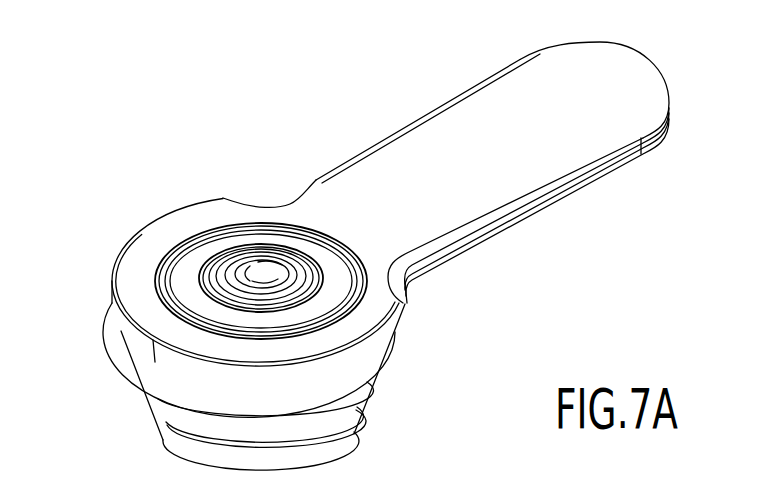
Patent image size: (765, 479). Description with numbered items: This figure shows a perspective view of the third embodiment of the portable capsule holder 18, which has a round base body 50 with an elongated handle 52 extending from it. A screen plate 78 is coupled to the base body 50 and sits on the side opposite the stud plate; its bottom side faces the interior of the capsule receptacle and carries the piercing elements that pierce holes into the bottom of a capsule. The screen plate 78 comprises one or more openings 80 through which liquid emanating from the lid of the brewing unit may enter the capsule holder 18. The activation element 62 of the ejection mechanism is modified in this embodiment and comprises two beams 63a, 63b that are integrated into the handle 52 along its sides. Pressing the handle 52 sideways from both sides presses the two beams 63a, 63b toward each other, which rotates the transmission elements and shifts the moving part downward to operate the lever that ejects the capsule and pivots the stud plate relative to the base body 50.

The portable capsule holder 18 is at (111, 118).
The activation element 62 is at (333, 148).
The handle 52 is at (485, 98).
The beam 63a is at (302, 192).
The beam 63b is at (418, 259).
The base body 50 is at (178, 388).
The screen plate 78 is at (193, 262).
The opening 80 is at (270, 262).